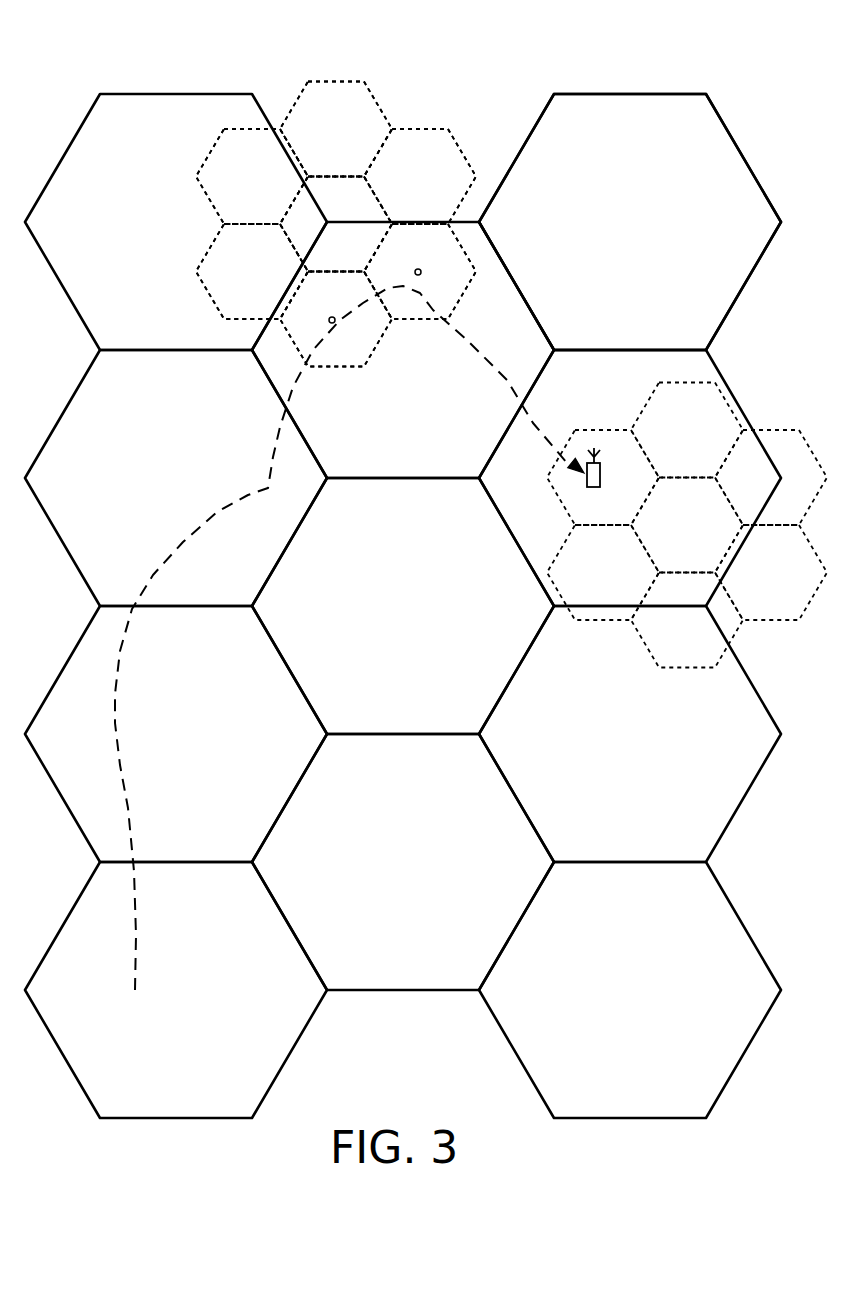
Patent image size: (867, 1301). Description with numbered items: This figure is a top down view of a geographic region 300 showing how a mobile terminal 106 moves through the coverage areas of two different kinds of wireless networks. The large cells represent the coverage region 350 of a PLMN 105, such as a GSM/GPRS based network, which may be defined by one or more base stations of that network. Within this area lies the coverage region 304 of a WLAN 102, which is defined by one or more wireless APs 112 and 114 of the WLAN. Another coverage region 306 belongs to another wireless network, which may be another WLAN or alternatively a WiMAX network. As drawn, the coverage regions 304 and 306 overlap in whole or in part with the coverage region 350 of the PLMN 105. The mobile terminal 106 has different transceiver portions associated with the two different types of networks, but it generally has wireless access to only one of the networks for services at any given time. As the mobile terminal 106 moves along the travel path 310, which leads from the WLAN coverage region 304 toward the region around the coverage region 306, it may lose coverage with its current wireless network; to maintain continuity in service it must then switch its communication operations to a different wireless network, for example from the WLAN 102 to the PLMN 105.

The WLAN 102 is at (336, 205).
The PLMN 105 is at (416, 567).
The mobile terminal 106 is at (600, 486).
The wireless AP 112 is at (330, 318).
The wireless AP 114 is at (416, 270).
The geographic region 300 is at (569, 1218).
The coverage region 304 is at (418, 100).
The coverage region 306 is at (759, 402).
The travel path 310 is at (117, 722).
The coverage region 350 is at (755, 134).